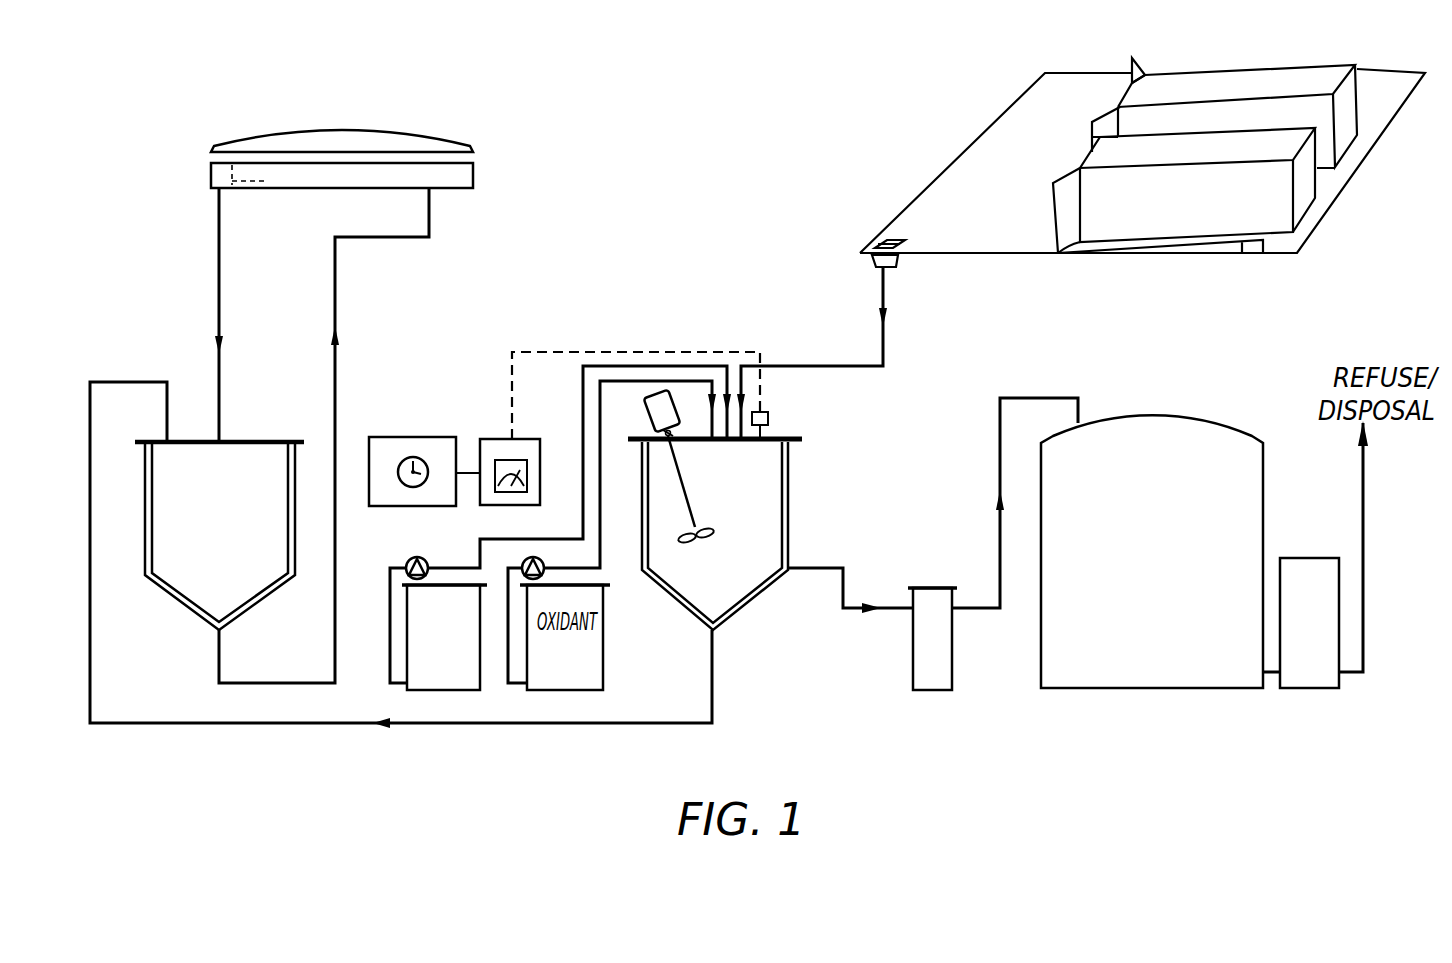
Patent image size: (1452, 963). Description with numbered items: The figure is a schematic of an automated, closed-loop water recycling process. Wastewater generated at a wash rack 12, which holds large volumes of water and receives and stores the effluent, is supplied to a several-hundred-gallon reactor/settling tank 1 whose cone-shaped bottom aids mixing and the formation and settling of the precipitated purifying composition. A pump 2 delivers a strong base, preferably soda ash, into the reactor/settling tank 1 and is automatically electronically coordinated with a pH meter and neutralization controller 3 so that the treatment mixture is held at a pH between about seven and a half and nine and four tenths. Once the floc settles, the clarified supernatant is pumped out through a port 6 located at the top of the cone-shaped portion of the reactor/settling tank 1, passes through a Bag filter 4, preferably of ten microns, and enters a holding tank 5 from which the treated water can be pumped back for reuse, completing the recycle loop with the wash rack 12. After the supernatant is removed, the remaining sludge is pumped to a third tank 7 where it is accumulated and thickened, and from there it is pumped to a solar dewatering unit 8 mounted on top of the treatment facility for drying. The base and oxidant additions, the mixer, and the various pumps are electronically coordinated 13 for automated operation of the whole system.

The reactor/settling tank 1 is at (724, 491).
The pump 2 is at (417, 557).
The pH meter and neutralization controller 3 is at (498, 439).
The Bag filter 4 is at (942, 588).
The holding tank 5 is at (1151, 509).
The port 6 is at (787, 573).
The third tank 7 is at (226, 508).
The solar dewatering unit 8 is at (473, 178).
The wash rack 12 is at (957, 182).
The electronic coordination 13 is at (418, 437).